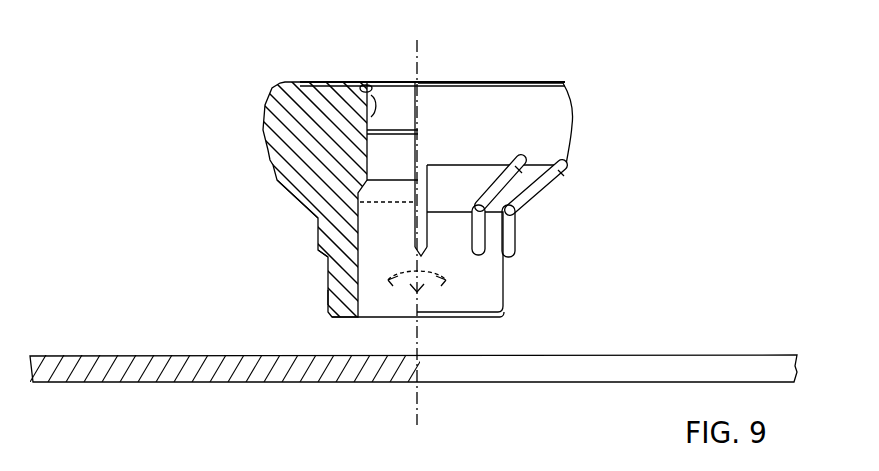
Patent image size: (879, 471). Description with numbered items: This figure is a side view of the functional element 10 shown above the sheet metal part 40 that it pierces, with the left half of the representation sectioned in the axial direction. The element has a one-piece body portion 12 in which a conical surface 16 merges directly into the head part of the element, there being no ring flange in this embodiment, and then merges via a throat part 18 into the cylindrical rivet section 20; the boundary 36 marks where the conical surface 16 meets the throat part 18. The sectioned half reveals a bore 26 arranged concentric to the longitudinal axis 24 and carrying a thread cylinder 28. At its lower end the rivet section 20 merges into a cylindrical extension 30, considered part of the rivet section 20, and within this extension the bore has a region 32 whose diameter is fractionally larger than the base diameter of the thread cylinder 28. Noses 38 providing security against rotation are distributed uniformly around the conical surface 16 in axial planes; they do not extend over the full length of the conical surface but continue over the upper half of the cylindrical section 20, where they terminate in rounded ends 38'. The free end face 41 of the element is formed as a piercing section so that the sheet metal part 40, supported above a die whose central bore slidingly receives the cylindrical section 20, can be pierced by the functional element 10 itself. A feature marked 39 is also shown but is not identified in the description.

The functional element 10 is at (575, 120).
The body portion 12 is at (266, 126).
The conical surface 16 is at (468, 170).
The throat part 18 is at (326, 255).
The rivet section 20 is at (505, 300).
The longitudinal axis 24 is at (418, 68).
The bore 26 is at (367, 87).
The thread cylinder 28 is at (370, 158).
The cylindrical extension 30 is at (330, 298).
The bore region 32 is at (379, 295).
The boundary 36 is at (318, 221).
The noses providing security against rotation 38 is at (394, 196).
The rounded ends 38' is at (545, 258).
The top surface 39 is at (540, 84).
The sheet metal part 40 is at (130, 372).
The free end face 41 is at (352, 318).